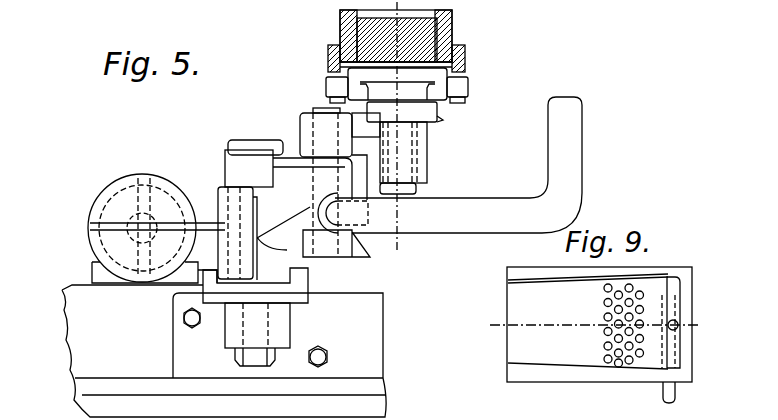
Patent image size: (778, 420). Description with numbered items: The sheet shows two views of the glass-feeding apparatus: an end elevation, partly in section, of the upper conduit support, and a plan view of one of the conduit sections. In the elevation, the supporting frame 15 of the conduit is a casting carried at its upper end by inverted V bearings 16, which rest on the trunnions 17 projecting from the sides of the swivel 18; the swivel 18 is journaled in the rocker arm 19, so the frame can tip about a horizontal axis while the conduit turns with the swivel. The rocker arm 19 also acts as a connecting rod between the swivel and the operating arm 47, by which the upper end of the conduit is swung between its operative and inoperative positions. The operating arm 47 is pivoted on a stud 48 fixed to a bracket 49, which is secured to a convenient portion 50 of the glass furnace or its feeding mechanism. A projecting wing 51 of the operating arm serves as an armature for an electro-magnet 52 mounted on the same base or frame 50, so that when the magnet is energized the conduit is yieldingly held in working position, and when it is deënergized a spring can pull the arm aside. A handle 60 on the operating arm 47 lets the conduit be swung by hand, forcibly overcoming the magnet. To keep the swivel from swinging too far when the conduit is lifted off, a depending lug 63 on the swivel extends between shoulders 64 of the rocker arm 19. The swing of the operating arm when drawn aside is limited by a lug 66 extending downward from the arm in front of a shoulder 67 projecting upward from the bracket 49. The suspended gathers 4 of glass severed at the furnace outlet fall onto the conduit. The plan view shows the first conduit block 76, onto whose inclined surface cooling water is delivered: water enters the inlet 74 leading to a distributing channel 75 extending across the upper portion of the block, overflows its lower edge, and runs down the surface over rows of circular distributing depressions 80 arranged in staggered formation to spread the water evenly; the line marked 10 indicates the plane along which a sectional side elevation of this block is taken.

In FIG. 5, the suspended gathers of glass 4 is at (397, 250).
In FIG. 5, the supporting frame 15 is at (467, 68).
In FIG. 5, the inverted V bearings 16 is at (335, 100).
In FIG. 5, the trunnions 17 is at (470, 88).
In FIG. 5, the swivel 18 is at (418, 155).
In FIG. 5, the rocker arm 19 is at (423, 176).
In FIG. 5, the operating arm 47 is at (222, 172).
In FIG. 5, the stud 48 is at (250, 147).
In FIG. 5, the bracket 49 is at (327, 327).
In FIG. 5, the base or frame of glass furnace 50 is at (375, 296).
In FIG. 5, the projecting wing (armature) 51 is at (100, 200).
In FIG. 5, the electro-magnet 52 is at (92, 268).
In FIG. 5, the handle 60 is at (578, 165).
In FIG. 5, the depending lug 63 is at (445, 113).
In FIG. 5, the shoulders 64 is at (441, 118).
In FIG. 5, the lug 66 is at (290, 305).
In FIG. 5, the shoulder 67 is at (310, 279).
In FIG. 9, the section line 10 is at (592, 325).
In FIG. 9, the inlet 74 is at (660, 360).
In FIG. 9, the distributing channel 75 is at (672, 282).
In FIG. 5, the conduit block 76 is at (455, 27).
In FIG. 9, the conduit block 76 is at (533, 386).
In FIG. 9, the distributing depressions 80 is at (626, 360).